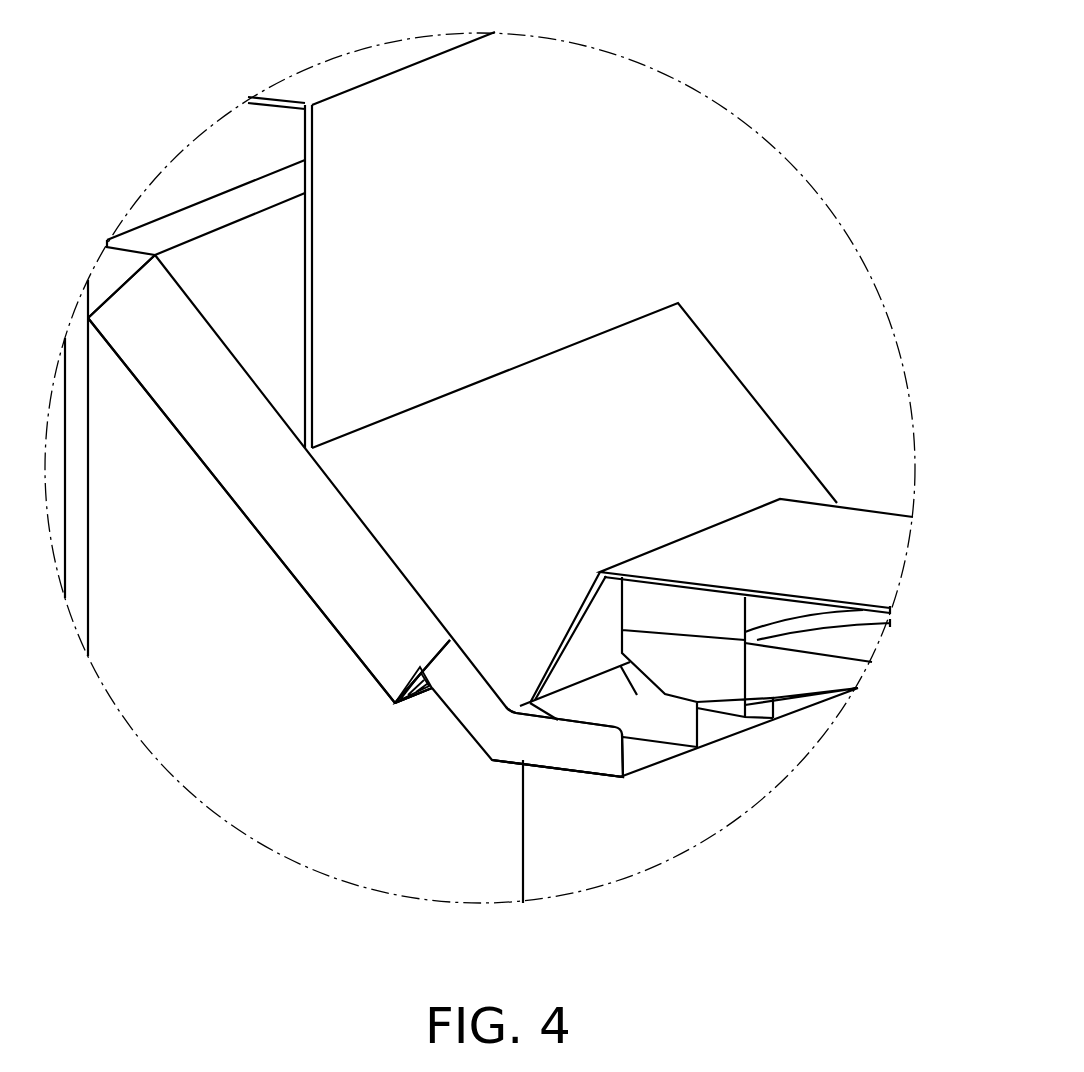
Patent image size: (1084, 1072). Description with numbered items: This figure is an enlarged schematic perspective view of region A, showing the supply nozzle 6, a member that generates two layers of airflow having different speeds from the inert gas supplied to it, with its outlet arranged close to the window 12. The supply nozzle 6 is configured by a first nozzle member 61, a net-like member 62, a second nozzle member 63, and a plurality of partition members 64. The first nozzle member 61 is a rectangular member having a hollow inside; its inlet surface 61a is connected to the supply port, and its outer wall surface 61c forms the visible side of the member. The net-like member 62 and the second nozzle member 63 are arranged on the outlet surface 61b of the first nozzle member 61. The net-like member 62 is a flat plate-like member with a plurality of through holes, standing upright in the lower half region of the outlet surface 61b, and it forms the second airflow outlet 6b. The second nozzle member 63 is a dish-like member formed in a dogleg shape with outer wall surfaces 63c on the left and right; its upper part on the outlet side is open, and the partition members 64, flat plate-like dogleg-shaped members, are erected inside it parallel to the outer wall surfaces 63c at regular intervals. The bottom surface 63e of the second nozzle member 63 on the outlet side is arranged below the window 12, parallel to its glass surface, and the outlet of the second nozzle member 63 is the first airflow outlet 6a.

The supply nozzle 6 is at (272, 625).
The first airflow outlet 6a is at (578, 781).
The second airflow outlet 6b is at (413, 717).
The window 12 is at (853, 643).
The first nozzle member 61 is at (273, 518).
The inlet surface 61a is at (90, 332).
The outlet surface 61b is at (393, 706).
The outer wall surface 61c is at (241, 510).
The net-like member 62 is at (392, 684).
The second nozzle member 63 is at (484, 726).
The outer wall surfaces 63c is at (557, 755).
The bottom surface 63e is at (652, 750).
The partition members 64 is at (767, 708).
The region A is at (827, 733).